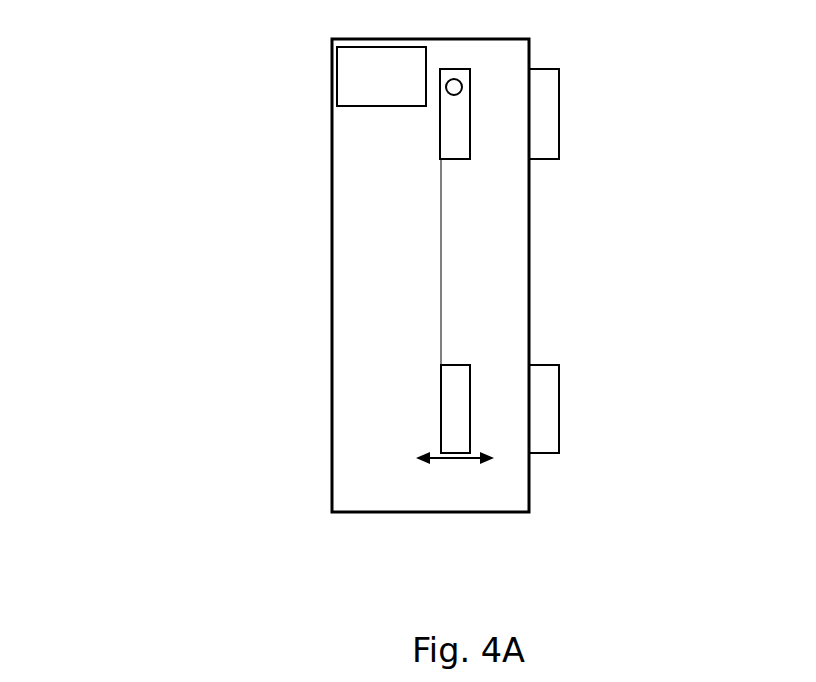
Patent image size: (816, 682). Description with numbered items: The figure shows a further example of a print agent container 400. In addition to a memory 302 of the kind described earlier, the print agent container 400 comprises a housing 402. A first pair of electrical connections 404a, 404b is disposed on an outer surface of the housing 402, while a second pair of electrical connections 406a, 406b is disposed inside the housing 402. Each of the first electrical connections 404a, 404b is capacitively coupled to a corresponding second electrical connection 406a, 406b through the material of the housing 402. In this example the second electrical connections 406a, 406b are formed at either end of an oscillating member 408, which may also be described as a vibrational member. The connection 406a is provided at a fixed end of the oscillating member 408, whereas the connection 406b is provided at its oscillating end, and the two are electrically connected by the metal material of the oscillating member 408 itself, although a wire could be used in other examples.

The print agent container 400 is at (176, 67).
The memory 302 is at (381, 76).
The housing 402 is at (333, 377).
The first electrical connection 404a is at (559, 114).
The first electrical connection 404b is at (559, 412).
The second electrical connection 406a is at (453, 149).
The second electrical connection 406b is at (440, 412).
The oscillating member 408 is at (440, 257).